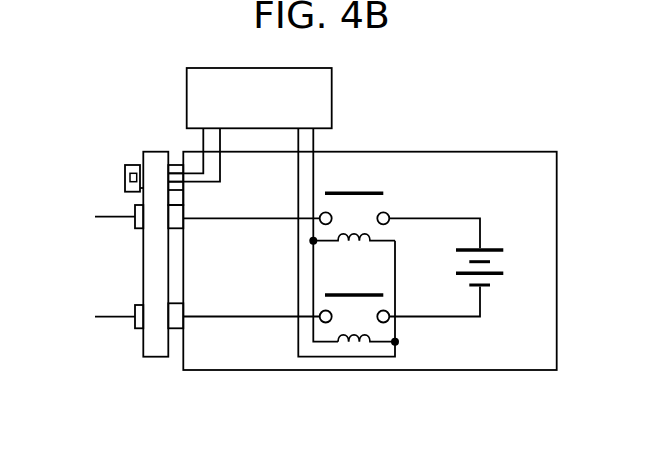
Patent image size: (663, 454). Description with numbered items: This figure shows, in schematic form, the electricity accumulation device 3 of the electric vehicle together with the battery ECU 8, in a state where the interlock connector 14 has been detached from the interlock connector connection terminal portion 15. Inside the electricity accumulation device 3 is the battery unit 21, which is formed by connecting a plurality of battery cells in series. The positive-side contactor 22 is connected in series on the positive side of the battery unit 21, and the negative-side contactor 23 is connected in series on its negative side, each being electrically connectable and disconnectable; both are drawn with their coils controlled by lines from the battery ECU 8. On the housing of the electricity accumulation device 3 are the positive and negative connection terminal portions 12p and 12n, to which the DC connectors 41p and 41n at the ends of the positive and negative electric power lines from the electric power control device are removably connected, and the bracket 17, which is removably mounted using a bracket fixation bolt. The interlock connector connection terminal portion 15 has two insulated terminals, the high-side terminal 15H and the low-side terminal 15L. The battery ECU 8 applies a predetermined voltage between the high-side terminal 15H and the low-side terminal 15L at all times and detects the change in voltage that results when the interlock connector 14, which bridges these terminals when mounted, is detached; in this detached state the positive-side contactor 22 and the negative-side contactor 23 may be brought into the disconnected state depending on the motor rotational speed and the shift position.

The electricity accumulation device 3 is at (487, 116).
The battery electronic control unit (ECU) 8 is at (332, 99).
The positive connection terminal portion 12p is at (178, 223).
The negative connection terminal portion 12n is at (178, 310).
The interlock connector 14 is at (125, 176).
The interlock connector connection terminal portion 15 is at (178, 163).
The high-side terminal 15H is at (168, 173).
The low-side terminal 15L is at (168, 182).
The bracket 17 is at (157, 351).
The battery unit 21 is at (485, 249).
The positive-side contactor 22 is at (352, 193).
The negative-side contactor 23 is at (352, 295).
The positive DC connector 41p is at (135, 207).
The negative DC connector 41n is at (135, 322).